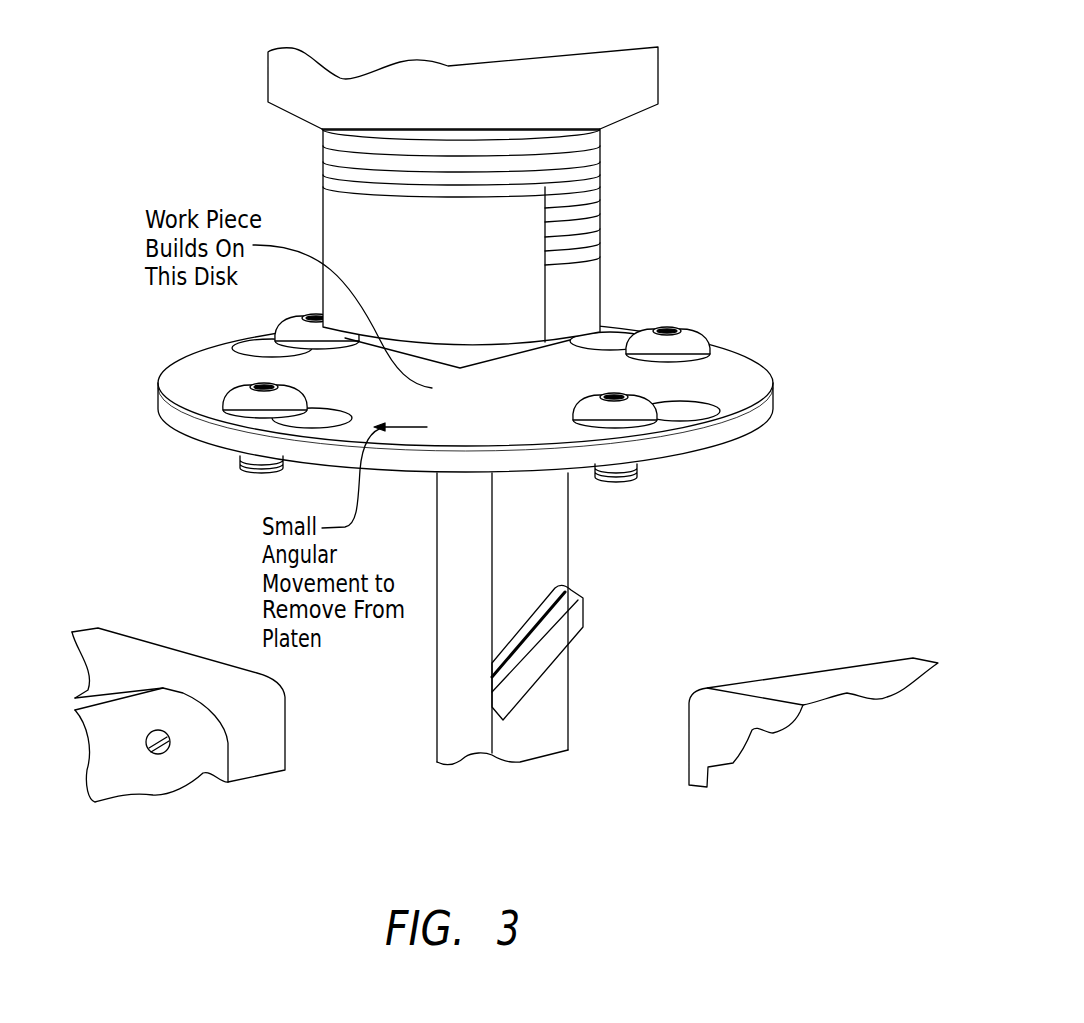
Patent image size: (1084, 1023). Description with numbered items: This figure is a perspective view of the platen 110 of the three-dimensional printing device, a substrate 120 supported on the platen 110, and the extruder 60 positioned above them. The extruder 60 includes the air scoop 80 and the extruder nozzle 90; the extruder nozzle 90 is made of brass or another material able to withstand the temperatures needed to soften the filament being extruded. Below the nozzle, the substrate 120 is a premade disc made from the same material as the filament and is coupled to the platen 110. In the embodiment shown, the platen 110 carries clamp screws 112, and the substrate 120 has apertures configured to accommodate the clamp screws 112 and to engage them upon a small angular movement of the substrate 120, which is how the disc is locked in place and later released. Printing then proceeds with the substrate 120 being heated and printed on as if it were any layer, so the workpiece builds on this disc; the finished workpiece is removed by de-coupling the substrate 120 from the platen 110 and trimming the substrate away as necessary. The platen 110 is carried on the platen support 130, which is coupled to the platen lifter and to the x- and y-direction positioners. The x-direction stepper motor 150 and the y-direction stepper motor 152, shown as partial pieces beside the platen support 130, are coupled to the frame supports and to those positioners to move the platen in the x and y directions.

The extruder 60 is at (588, 265).
The air scoop 80 is at (338, 208).
The extruder nozzle 90 is at (468, 362).
The platen 110 is at (578, 460).
The clamp screws 112 is at (637, 418).
The substrate 120 is at (720, 367).
The platen support 130 is at (470, 680).
The x-direction stepper motor 150 is at (270, 697).
The y-direction stepper motor 152 is at (710, 707).